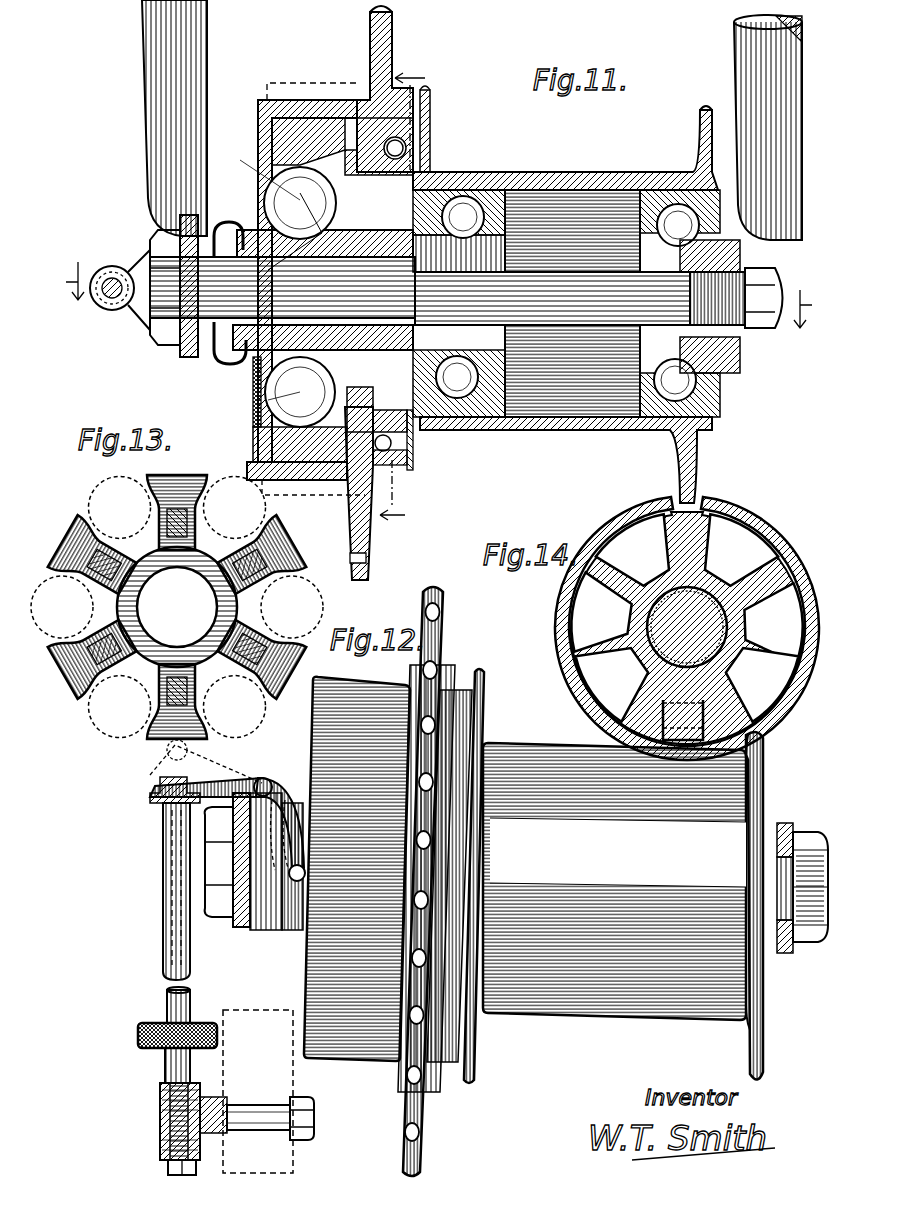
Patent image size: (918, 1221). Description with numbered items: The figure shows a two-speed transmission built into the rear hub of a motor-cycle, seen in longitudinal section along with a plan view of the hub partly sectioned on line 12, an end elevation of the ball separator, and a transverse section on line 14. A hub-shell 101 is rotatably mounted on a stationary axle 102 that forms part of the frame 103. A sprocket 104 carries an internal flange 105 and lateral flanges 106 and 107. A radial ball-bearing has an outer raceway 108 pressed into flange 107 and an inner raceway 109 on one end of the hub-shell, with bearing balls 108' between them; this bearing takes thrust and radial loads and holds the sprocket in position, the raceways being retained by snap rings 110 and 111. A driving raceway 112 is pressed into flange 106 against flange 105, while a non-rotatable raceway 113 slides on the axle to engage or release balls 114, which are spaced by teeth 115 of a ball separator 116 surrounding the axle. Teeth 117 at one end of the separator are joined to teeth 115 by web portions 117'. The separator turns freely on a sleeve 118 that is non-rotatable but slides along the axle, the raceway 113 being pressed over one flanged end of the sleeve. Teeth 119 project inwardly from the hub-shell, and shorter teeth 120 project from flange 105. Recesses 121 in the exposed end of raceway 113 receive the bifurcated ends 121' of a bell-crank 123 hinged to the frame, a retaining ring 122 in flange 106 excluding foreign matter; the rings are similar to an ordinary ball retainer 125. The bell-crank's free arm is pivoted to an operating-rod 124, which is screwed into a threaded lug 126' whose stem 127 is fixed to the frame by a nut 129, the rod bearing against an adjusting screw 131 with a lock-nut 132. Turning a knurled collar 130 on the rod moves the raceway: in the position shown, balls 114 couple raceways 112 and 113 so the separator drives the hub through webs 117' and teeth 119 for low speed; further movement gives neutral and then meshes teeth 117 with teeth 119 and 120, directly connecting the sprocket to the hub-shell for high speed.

In FIG. 11, the hub-shell 101 is at (580, 172).
In FIG. 14, the hub-shell 101 is at (755, 522).
In FIG. 12, the hub-shell 101 is at (605, 748).
In FIG. 11, the axle 102 is at (628, 312).
In FIG. 14, the axle 102 is at (697, 665).
In FIG. 12, the axle 102 is at (800, 942).
In FIG. 11, the frame 103 is at (150, 152).
In FIG. 12, the frame 103 is at (787, 830).
In FIG. 11, the sprocket 104 is at (390, 48).
In FIG. 12, the sprocket 104 is at (446, 628).
In FIG. 11, the internal flange 105 is at (270, 125).
In FIG. 11, the lateral flange 106 is at (305, 100).
In FIG. 12, the lateral flange 106 is at (313, 736).
In FIG. 11, the lateral flange 107 is at (430, 100).
In FIG. 12, the lateral flange 107 is at (479, 692).
In FIG. 11, the outer raceway 108 is at (407, 457).
In FIG. 11, the bearing balls 108' is at (420, 465).
In FIG. 11, the inner raceway 109 is at (406, 142).
In FIG. 11, the snap ring 110 is at (404, 152).
In FIG. 11, the snap ring 111 is at (405, 490).
In FIG. 11, the driving raceway 112 is at (272, 143).
In FIG. 11, the non-rotatable raceway 113 is at (222, 358).
In FIG. 12, the non-rotatable raceway 113 is at (302, 800).
In FIG. 11, the balls 114 is at (255, 448).
In FIG. 13, the balls 114 is at (135, 480).
In FIG. 11, the teeth 115 is at (233, 271).
In FIG. 13, the teeth 115 is at (85, 665).
In FIG. 11, the ball separator 116 is at (338, 240).
In FIG. 13, the ball separator 116 is at (180, 633).
In FIG. 11, the teeth 117 is at (462, 303).
In FIG. 13, the teeth 117 is at (140, 607).
In FIG. 14, the teeth 117 is at (768, 520).
In FIG. 11, the web portions 117' is at (393, 291).
In FIG. 13, the web portions 117' is at (258, 607).
In FIG. 11, the sleeve 118 is at (452, 270).
In FIG. 14, the sleeve 118 is at (666, 683).
In FIG. 11, the teeth 119 is at (348, 490).
In FIG. 14, the teeth 119 is at (633, 545).
In FIG. 11, the teeth 120 is at (310, 483).
In FIG. 11, the recesses 121 is at (257, 291).
In FIG. 12, the recesses 121 is at (269, 879).
In FIG. 11, the bifurcated ends 121' is at (264, 274).
In FIG. 12, the bifurcated ends 121' is at (321, 863).
In FIG. 11, the retaining ring 122 is at (268, 400).
In FIG. 11, the bell-crank 123 is at (155, 322).
In FIG. 12, the bell-crank 123 is at (150, 791).
In FIG. 11, the operating-rod 124 is at (105, 305).
In FIG. 12, the operating-rod 124 is at (195, 975).
In FIG. 11, the ball retainer 125 is at (700, 398).
In FIG. 11, the threaded rod 126' is at (312, 76).
In FIG. 12, the threaded rod 126' is at (169, 1121).
In FIG. 12, the stem 127 is at (252, 1105).
In FIG. 12, the nut 129 is at (314, 1100).
In FIG. 12, the knurled collar 130 is at (138, 1037).
In FIG. 12, the adjusting screw 131 is at (158, 1134).
In FIG. 12, the lock-nut 132 is at (158, 1158).
In FIG. 11, the section line 12 is at (432, 295).
In FIG. 11, the section line 14 is at (402, 298).